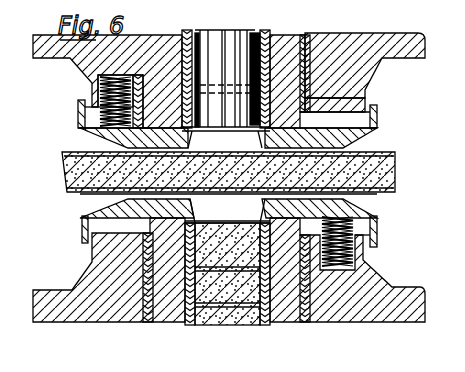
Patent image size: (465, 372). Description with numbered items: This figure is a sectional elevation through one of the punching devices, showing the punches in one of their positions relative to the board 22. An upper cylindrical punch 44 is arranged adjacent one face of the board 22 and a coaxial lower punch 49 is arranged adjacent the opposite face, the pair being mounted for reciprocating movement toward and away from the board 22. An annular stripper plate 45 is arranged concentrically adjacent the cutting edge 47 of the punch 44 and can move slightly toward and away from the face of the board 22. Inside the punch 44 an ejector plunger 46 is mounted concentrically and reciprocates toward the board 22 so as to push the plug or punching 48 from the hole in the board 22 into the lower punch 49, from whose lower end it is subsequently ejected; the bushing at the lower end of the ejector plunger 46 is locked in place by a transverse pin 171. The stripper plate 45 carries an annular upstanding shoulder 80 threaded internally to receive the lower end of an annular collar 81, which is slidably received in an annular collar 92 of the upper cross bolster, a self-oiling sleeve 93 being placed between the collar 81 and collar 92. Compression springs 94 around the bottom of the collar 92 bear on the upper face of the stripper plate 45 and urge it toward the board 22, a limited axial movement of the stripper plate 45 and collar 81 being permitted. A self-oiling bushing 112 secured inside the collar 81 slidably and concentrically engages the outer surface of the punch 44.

The board 22 is at (393, 171).
The upper cylindrical punch 44 is at (263, 34).
The annular stripper plate 45 is at (378, 131).
The ejector plunger 46 is at (214, 58).
The cutting edge 47 is at (100, 137).
The plug or punching 48 is at (214, 322).
The lower punch 49 is at (264, 330).
The annular upstanding shoulder 80 is at (99, 90).
The annular collar 81 is at (377, 108).
The annular collar of bolster 92 is at (310, 67).
The self-oiling sleeve 93 is at (303, 97).
The compression spring 94 is at (104, 117).
The self-oiling bushing 112 is at (340, 57).
The transverse pin 171 is at (312, 62).